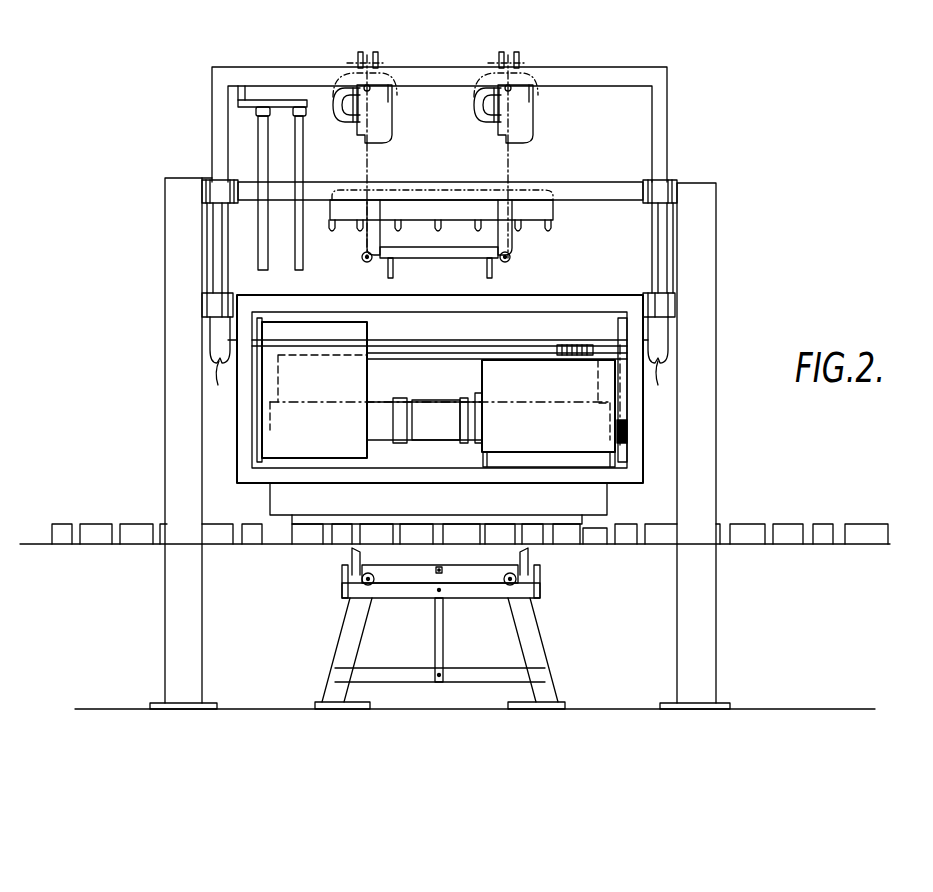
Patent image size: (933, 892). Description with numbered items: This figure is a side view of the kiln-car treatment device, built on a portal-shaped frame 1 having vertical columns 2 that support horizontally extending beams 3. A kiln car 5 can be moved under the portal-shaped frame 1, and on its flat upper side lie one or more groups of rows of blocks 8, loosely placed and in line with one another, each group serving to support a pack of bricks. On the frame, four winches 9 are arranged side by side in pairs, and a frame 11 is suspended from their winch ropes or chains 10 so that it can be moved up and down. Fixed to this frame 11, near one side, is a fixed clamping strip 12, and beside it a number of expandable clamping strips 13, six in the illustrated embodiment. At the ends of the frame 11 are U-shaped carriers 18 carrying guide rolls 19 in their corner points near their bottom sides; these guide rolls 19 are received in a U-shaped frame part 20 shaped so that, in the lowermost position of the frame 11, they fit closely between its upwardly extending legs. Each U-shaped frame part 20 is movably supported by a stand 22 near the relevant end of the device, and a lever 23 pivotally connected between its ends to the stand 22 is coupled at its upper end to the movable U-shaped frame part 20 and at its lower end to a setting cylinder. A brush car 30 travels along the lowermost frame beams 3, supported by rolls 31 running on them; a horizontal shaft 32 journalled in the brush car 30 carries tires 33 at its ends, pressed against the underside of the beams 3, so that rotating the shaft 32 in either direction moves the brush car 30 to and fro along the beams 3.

The portal-shaped frame 1 is at (726, 313).
The vertical columns 2 is at (177, 416).
The horizontally extending beams 3 is at (668, 290).
The kiln car 5 is at (880, 574).
The rows of blocks 8 is at (788, 530).
The winches 9 is at (393, 129).
The winch ropes or chains 10 is at (367, 173).
The frame 11 is at (553, 212).
The fixed clamping strip 12 is at (341, 233).
The expandable clamping strips 13 is at (525, 230).
The U-shaped carriers 18 is at (447, 257).
The guide rolls 19 is at (368, 262).
The U-shaped frame part 20 is at (405, 570).
The stand 22 is at (533, 645).
The lever 23 is at (443, 640).
The brush car 30 is at (630, 483).
The rolls 31 is at (232, 294).
The horizontal shaft 32 is at (489, 340).
The tires 33 is at (439, 365).